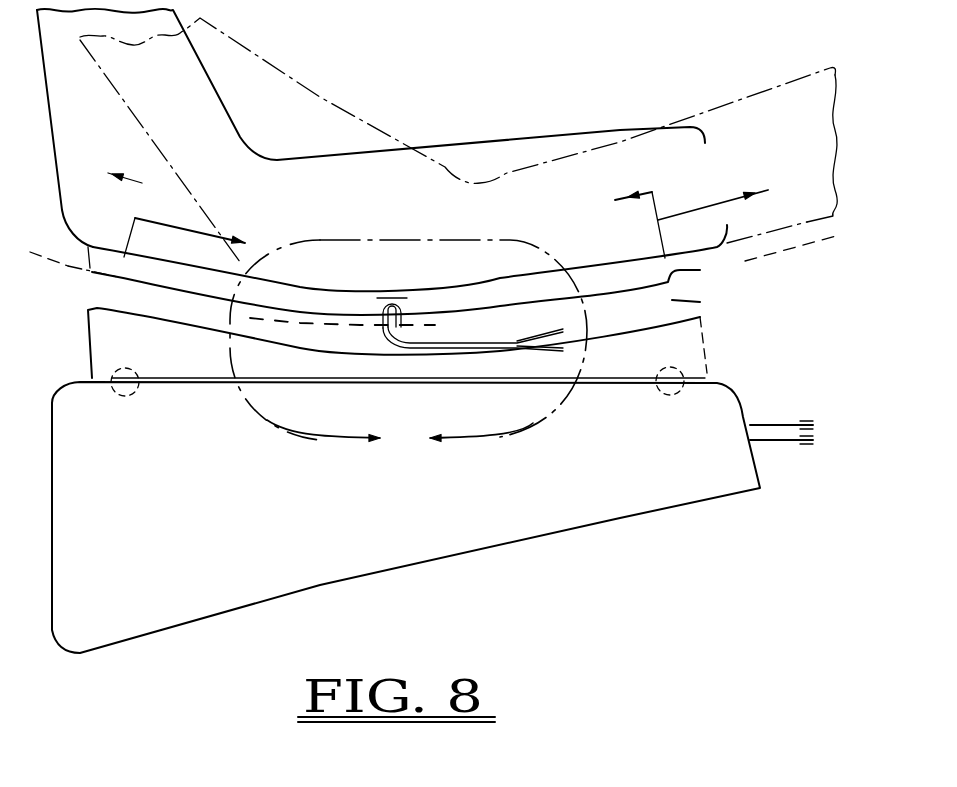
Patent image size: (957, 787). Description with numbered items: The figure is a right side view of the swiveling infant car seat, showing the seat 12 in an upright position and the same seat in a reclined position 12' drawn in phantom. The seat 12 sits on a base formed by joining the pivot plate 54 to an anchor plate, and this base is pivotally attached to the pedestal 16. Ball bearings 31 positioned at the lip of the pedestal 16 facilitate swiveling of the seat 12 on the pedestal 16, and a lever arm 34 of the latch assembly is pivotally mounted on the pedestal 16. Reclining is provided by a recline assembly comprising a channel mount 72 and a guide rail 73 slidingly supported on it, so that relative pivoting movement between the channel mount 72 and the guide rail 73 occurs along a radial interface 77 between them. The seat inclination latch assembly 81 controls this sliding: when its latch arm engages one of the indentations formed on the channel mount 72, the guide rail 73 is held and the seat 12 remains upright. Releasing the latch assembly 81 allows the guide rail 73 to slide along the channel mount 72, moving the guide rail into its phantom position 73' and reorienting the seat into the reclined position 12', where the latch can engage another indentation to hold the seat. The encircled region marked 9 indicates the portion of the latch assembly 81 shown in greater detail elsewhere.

The seat 12 is at (371, 128).
The reclined position of seat 12' is at (458, 140).
The guide rail 73 is at (454, 283).
The phantom position of guide rail 73' is at (431, 296).
The channel mount 72 is at (700, 302).
The pivot plate 54 is at (710, 357).
The radial interface 77 is at (58, 264).
The ball bearings 31 is at (117, 373).
The pedestal 16 is at (703, 508).
The lever arm 34 is at (767, 433).
The seat inclination latch assembly 81 is at (517, 352).
The detail region shown in FIG. 9 is at (408, 347).